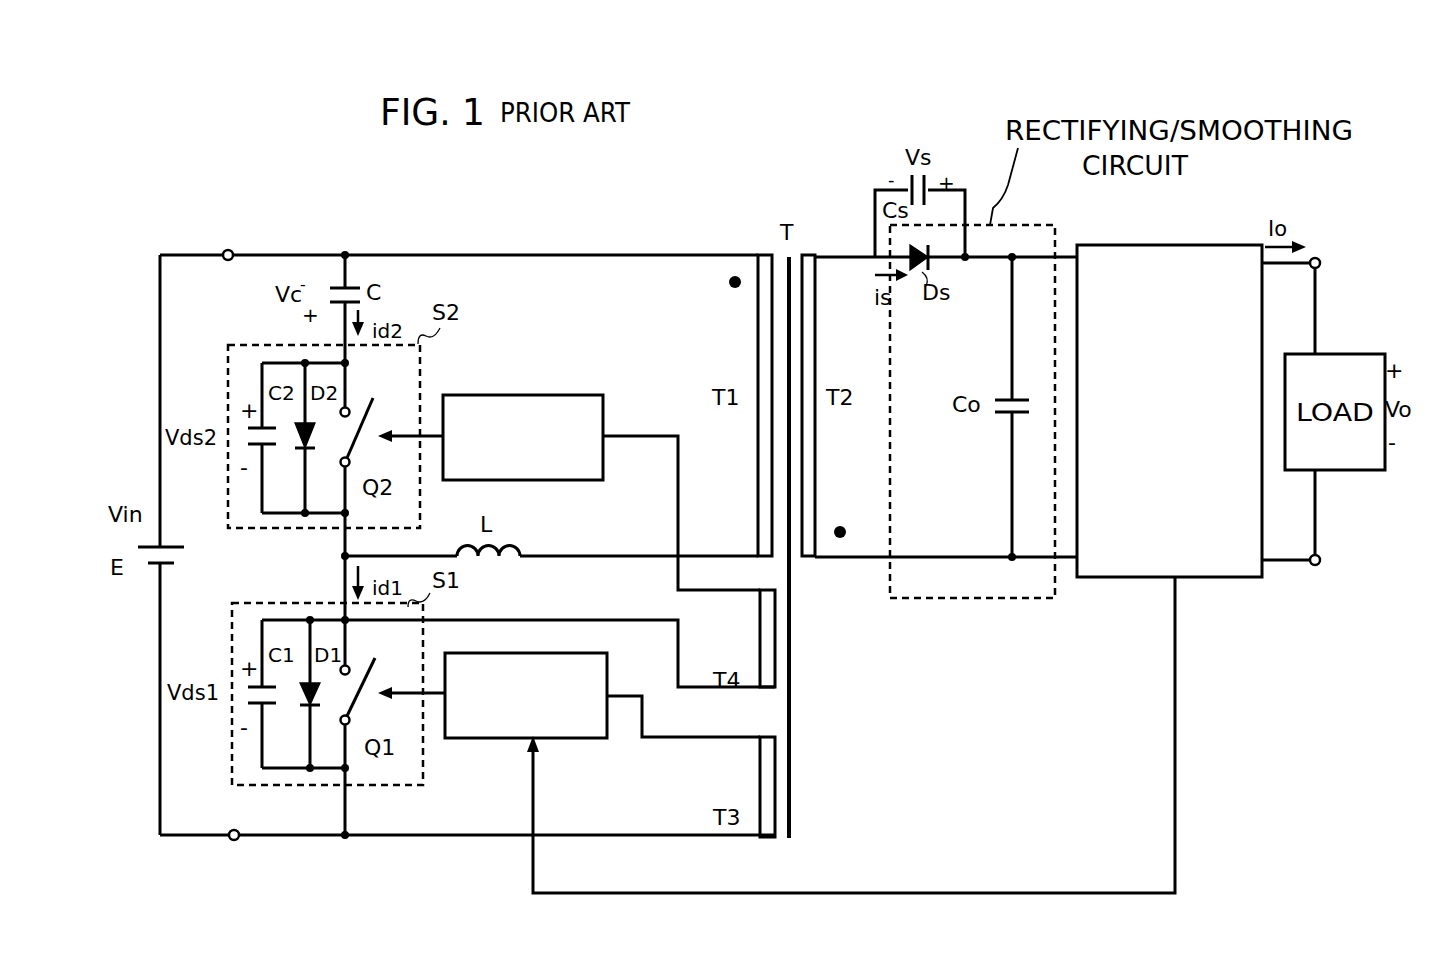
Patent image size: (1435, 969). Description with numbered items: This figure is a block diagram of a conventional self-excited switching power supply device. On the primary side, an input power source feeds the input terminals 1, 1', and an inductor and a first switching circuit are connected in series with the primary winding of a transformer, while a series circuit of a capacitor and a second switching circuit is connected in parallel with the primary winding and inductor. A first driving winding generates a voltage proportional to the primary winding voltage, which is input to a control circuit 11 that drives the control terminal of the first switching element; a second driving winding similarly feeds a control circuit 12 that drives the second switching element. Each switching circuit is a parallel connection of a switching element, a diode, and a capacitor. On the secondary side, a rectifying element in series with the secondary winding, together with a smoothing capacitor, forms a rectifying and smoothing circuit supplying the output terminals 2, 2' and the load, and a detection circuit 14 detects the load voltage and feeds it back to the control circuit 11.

The input terminal 1 is at (228, 242).
The input terminal 1' is at (232, 853).
The output terminal 2 is at (1313, 246).
The output terminal 2' is at (1316, 579).
The control circuit 11 is at (615, 657).
The control circuit 12 is at (600, 392).
The detection circuit 14 is at (1240, 240).